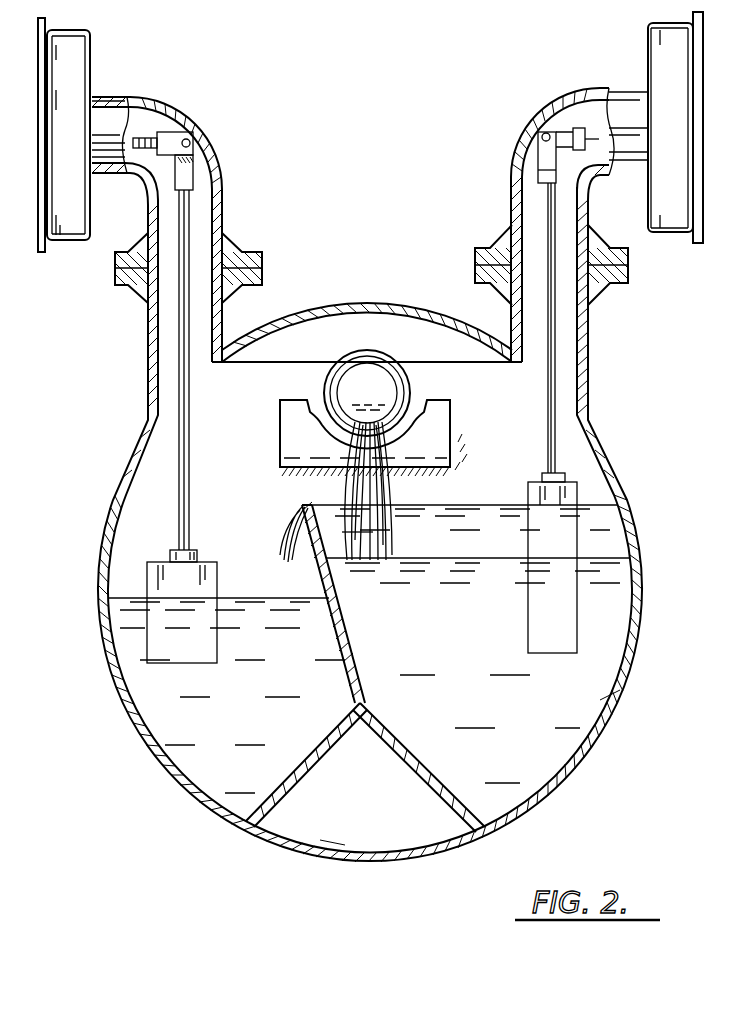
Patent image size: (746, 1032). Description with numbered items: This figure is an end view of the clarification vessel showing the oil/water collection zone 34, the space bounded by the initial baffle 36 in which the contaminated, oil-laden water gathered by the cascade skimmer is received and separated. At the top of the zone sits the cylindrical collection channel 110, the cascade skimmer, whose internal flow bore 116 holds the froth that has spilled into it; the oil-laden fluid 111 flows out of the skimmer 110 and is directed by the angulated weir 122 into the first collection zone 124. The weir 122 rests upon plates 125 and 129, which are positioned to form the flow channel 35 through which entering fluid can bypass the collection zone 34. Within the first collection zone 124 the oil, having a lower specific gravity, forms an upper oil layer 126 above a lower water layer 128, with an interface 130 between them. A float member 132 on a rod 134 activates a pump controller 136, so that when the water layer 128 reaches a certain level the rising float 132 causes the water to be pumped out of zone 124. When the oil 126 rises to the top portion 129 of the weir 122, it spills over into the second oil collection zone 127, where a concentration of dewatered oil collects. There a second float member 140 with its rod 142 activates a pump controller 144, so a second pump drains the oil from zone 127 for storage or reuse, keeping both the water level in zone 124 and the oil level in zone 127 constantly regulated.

The oil/water collection zone 34 is at (433, 495).
The flow channel 35 is at (332, 822).
The baffle 36 is at (262, 390).
The cylindrical collection channel 110 is at (372, 360).
The oil-laden fluid 111 is at (370, 410).
The internal flow bore 116 is at (384, 394).
The angulated weir 122 is at (318, 547).
The first collection zone 124 is at (492, 666).
The plate 125 is at (303, 760).
The upper oil layer 126 is at (603, 531).
The second oil collection zone 127 is at (268, 690).
The lower water layer 128 is at (562, 712).
The plate / top portion of weir 129 is at (303, 503).
The interface 130 is at (608, 560).
The float member 132 is at (570, 493).
The rod 134 is at (548, 213).
The pump controller 136 is at (668, 44).
The second float member 140 is at (203, 581).
The rod 142 is at (190, 217).
The pump controller 144 is at (70, 72).